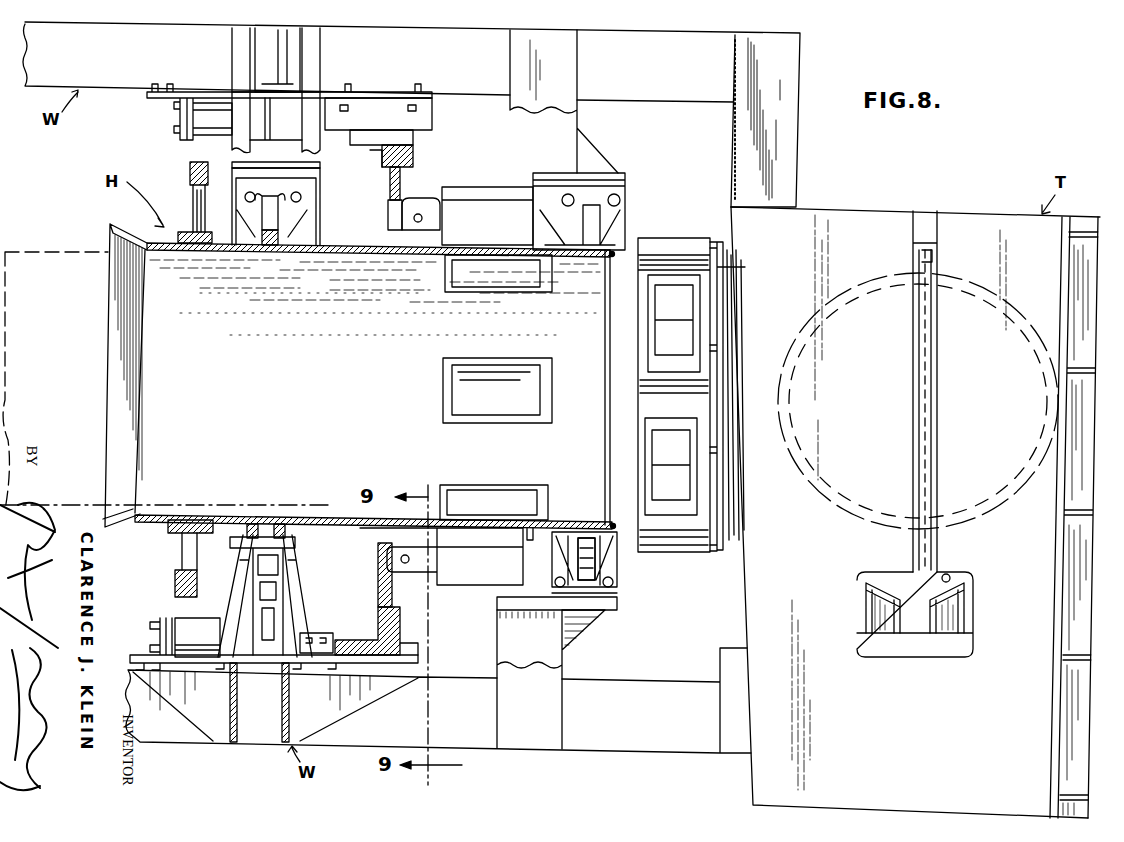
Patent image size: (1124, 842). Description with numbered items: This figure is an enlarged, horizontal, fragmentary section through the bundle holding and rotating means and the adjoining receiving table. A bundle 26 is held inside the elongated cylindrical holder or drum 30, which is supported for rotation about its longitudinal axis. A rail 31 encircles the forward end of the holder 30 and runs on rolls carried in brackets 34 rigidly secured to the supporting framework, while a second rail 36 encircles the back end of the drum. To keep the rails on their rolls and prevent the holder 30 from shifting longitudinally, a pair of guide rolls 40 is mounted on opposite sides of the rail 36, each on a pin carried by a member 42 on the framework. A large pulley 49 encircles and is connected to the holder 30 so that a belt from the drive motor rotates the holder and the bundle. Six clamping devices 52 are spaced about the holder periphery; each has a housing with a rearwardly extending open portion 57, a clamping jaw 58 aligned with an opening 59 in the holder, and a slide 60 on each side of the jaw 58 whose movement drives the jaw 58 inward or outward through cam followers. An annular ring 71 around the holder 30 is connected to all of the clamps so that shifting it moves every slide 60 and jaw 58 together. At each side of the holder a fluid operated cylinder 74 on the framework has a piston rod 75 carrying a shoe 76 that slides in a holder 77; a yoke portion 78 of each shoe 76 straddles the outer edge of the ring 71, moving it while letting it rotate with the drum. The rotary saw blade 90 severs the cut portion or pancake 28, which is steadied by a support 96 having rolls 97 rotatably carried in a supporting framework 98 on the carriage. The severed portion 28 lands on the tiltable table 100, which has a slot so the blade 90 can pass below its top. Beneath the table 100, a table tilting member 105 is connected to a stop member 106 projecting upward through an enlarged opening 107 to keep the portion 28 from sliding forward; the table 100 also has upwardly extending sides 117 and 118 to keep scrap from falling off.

The bundle 26 is at (38, 250).
The cut portion or pancake 28 is at (1005, 306).
The cylindrical holder or drum 30 is at (272, 284).
The rail 31 is at (598, 548).
The bracket 34 is at (620, 206).
The second rail 36 is at (305, 228).
The guide roll 40 is at (254, 522).
The member 42 is at (292, 612).
The large pulley 49 is at (176, 580).
The clamping device 52 is at (485, 180).
The rearwardly extending open portion 57 is at (388, 222).
The clamping jaw 58 is at (455, 384).
The opening 59 is at (445, 400).
The slide 60 is at (440, 218).
The annular ring 71 is at (402, 184).
The fluid operated cylinder 74 is at (205, 140).
The piston rod 75 is at (322, 636).
The shoe 76 is at (402, 140).
The holder 77 is at (425, 116).
The yoke portion 78 is at (382, 160).
The rotary saw blade 90 is at (937, 262).
The support 96 is at (659, 235).
The rolls 97 is at (700, 346).
The supporting framework 98 is at (712, 242).
The tiltable table 100 is at (963, 210).
The table tilting member 105 is at (932, 250).
The stop member 106 is at (972, 600).
The enlarged opening 107 is at (948, 578).
The upwardly extending side 117 is at (1052, 674).
The upwardly extending side 118 is at (728, 542).